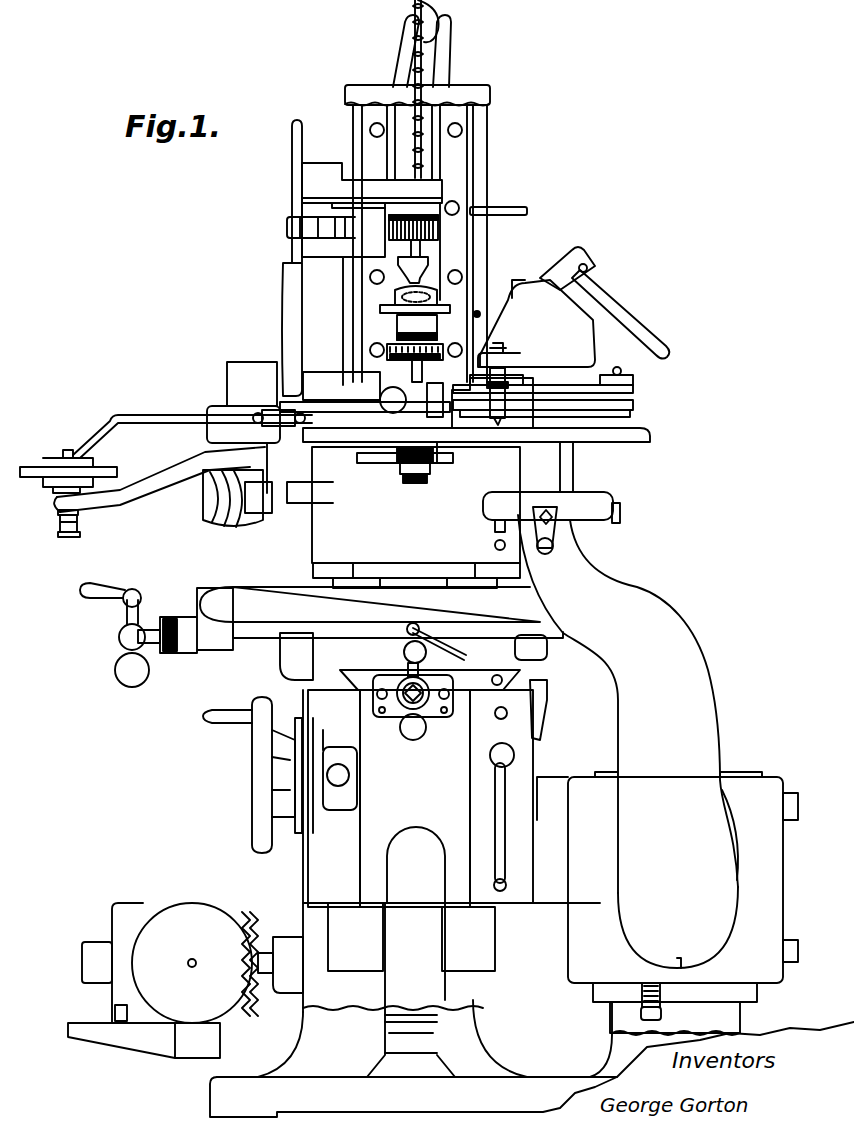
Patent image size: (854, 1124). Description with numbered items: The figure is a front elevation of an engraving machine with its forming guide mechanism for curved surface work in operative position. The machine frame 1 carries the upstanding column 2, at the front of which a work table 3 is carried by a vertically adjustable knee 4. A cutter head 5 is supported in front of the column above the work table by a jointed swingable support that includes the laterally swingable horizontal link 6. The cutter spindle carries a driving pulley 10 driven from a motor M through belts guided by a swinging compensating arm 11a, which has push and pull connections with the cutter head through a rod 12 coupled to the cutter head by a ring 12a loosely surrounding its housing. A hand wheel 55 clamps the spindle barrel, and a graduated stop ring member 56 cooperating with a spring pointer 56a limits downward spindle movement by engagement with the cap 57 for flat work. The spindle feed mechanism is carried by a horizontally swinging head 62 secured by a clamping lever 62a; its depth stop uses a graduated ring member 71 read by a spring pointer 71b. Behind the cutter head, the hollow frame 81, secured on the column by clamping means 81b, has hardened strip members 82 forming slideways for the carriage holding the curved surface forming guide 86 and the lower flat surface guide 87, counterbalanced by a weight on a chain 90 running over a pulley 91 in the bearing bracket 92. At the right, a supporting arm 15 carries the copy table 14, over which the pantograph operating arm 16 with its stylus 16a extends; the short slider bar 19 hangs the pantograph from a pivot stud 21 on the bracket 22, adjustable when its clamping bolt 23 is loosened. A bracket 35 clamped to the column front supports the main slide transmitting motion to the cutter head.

The machine frame 1 is at (228, 1095).
The upstanding column 2 is at (463, 1048).
The work table 3 is at (340, 583).
The vertically adjustable knee 4 is at (324, 745).
The cutter head 5 is at (405, 400).
The horizontal link 6 is at (288, 312).
The driving pulley 10 is at (402, 476).
The swinging compensating arm 11a is at (157, 492).
The rod 12 is at (155, 416).
The ring 12a is at (438, 464).
The flat table 14 is at (628, 437).
The supporting arm 15 is at (673, 631).
The operating arm 16 is at (514, 428).
The stylus or tracer 16a is at (500, 428).
The short slider bar 19 is at (548, 397).
The vertical pivot pin or stud 21 is at (507, 350).
The bracket or block 22 is at (584, 353).
The clamping bolt 23 is at (594, 268).
The bracket 35 is at (318, 532).
The hand wheel 55 is at (385, 398).
The stop ring member 56 is at (387, 358).
The spring finger or pointer 56a is at (497, 343).
The cap 57 is at (437, 325).
The swinging head 62 is at (373, 210).
The clamping lever 62a is at (292, 150).
The ring member 71 is at (440, 227).
The spring pointer 71b is at (440, 246).
The hollow frame or casing 81 is at (489, 115).
The clamping means 81b is at (528, 211).
The hardened strip members 82 is at (454, 153).
The curved surface forming guide 86 is at (420, 287).
The flat surface guide 87 is at (380, 311).
The chain 90 is at (412, 60).
The pulley or roller 91 is at (443, 13).
The bearing bracket 92 is at (443, 57).
The motor M is at (200, 913).